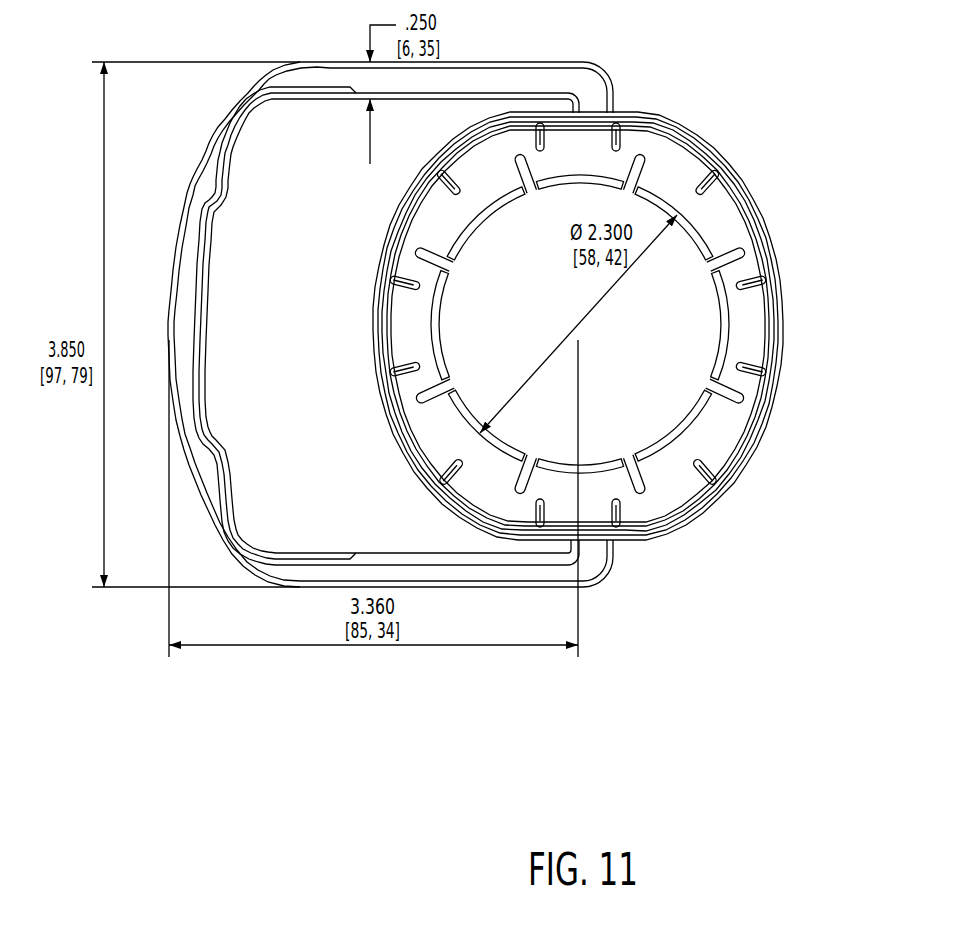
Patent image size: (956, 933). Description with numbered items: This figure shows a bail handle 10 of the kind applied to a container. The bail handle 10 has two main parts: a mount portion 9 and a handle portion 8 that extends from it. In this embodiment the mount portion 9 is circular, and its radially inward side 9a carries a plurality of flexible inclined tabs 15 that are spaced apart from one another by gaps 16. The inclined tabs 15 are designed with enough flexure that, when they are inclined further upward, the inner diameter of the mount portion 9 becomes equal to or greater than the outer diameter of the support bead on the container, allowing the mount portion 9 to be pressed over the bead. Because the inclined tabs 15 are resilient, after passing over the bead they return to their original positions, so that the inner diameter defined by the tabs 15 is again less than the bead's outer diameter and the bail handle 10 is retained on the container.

The handle portion 8 is at (201, 212).
The mount portion 9 is at (727, 159).
The radially inward side 9a is at (391, 317).
The bail handle 10 is at (601, 330).
The inclined tabs 15 is at (750, 328).
The gaps 16 is at (742, 249).